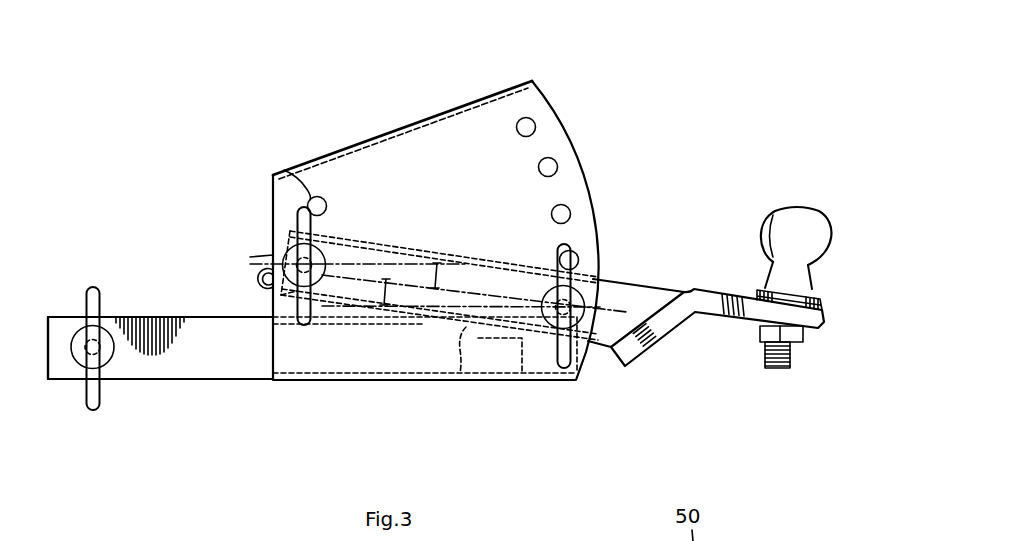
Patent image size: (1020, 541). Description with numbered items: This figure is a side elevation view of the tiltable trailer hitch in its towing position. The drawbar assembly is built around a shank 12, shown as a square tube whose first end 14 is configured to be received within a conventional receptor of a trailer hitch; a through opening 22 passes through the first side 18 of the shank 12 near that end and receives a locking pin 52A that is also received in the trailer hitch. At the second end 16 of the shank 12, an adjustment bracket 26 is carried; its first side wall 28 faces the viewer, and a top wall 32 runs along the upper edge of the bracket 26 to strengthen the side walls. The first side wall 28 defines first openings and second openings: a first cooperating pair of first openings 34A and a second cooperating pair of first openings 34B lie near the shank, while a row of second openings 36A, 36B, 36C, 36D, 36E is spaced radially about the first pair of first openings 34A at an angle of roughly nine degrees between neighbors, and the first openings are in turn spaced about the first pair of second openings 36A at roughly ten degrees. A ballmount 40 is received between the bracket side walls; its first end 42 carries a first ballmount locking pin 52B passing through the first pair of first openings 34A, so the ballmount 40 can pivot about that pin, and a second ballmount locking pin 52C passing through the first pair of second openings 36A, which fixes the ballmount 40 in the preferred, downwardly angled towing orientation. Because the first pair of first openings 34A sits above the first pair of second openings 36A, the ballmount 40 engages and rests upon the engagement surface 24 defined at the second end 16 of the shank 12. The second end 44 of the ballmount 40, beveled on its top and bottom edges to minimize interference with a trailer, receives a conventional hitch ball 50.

The shank 12 is at (230, 388).
The first end 14 is at (48, 372).
The second end 16 is at (523, 365).
The first side 18 is at (196, 359).
The through opening 22 is at (84, 349).
The engagement surface 24 is at (460, 373).
The adjustment bracket 26 is at (333, 145).
The first side wall 28 is at (503, 158).
The top wall 32 is at (475, 100).
The first cooperating pair of first openings 34A is at (289, 240).
The second cooperating pair of first openings 34B is at (316, 197).
The first cooperating pair of second openings 36A is at (603, 308).
The cooperating pair of second openings 36B is at (579, 260).
The cooperating pair of second openings 36C is at (571, 214).
The cooperating pair of second openings 36D is at (558, 167).
The cooperating pair of second openings 36E is at (536, 126).
The ballmount 40 is at (401, 235).
The first end 42 is at (292, 303).
The second end 44 is at (822, 323).
The hitch ball 50 is at (790, 225).
The locking pin 52A is at (93, 397).
The first ballmount locking pin 52B is at (300, 210).
The second ballmount locking pin 52C is at (566, 357).